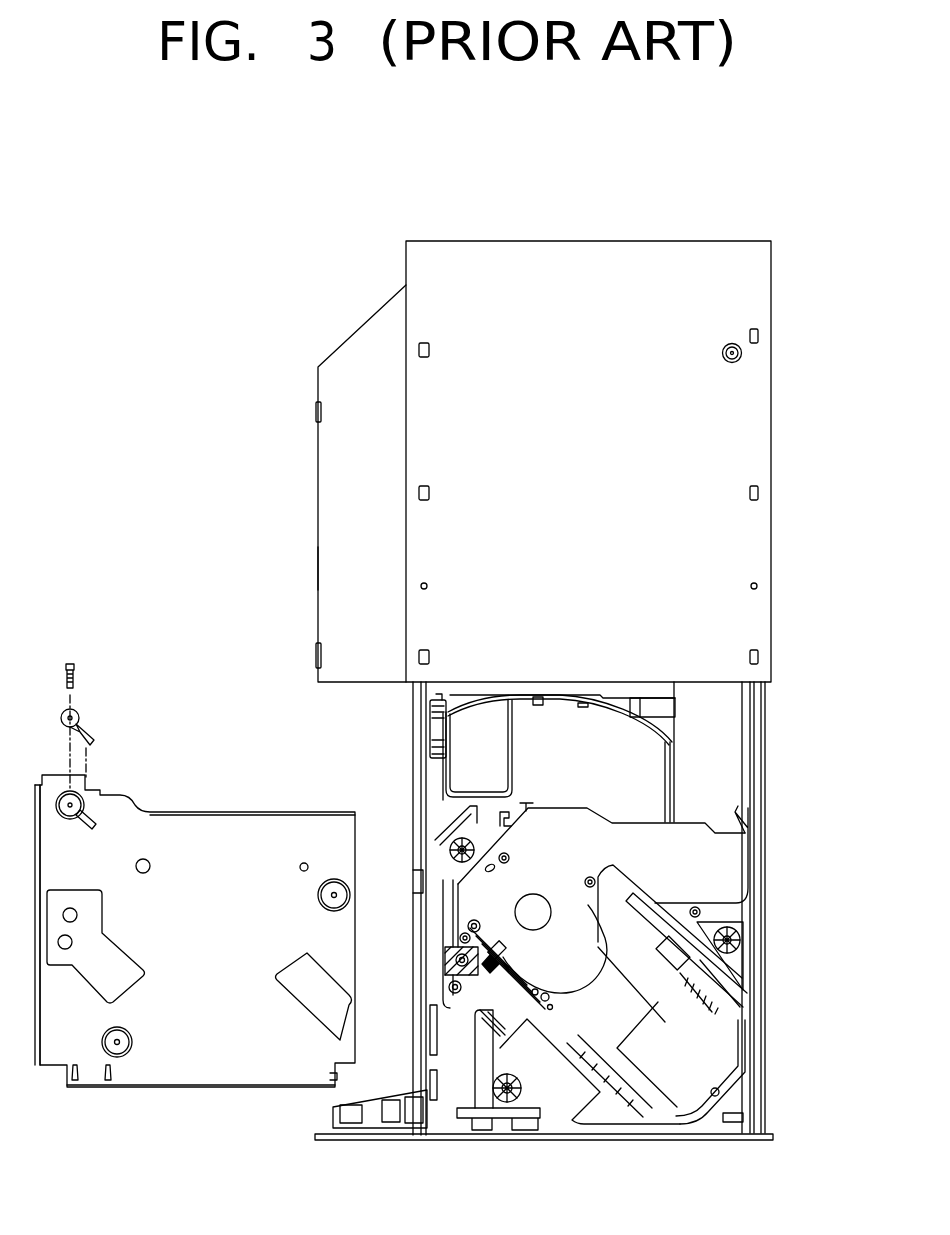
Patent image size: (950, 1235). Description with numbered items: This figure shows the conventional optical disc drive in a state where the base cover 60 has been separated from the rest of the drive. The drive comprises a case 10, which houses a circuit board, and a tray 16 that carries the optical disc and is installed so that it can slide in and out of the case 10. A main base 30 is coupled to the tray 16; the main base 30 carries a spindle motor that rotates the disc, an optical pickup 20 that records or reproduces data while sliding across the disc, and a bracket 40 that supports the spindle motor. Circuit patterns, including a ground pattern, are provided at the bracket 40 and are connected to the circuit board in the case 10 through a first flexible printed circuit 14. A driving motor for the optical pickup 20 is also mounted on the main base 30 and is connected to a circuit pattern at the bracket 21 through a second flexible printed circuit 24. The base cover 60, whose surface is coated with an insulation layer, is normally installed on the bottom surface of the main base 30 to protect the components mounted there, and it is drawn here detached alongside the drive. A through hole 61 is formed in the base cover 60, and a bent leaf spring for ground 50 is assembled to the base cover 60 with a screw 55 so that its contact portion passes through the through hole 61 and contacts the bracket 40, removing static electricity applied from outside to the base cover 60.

The case 10 is at (757, 433).
The first flexible printed circuit 14 is at (733, 767).
The tray 16 is at (525, 766).
The optical pickup 20 is at (602, 1043).
The bracket 21 is at (498, 1037).
The second flexible printed circuit 24 is at (470, 1058).
The main base 30 is at (745, 1063).
The bracket 40 is at (735, 868).
The leaf spring for ground 50 is at (88, 716).
The screw 55 is at (70, 660).
The base cover 60 is at (212, 1055).
The through hole 61 is at (95, 820).